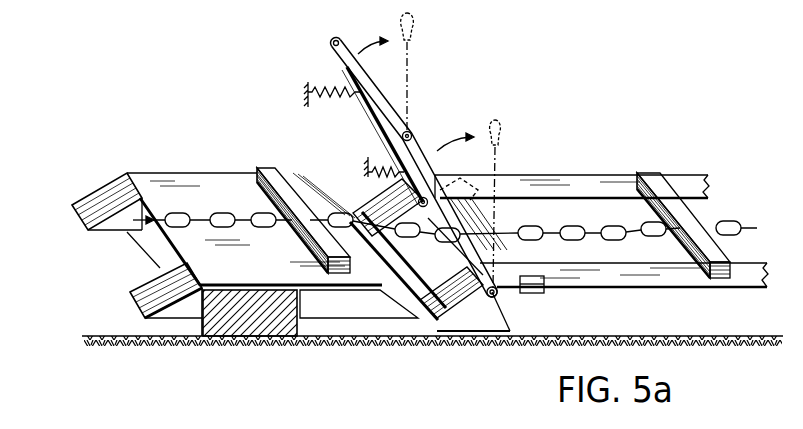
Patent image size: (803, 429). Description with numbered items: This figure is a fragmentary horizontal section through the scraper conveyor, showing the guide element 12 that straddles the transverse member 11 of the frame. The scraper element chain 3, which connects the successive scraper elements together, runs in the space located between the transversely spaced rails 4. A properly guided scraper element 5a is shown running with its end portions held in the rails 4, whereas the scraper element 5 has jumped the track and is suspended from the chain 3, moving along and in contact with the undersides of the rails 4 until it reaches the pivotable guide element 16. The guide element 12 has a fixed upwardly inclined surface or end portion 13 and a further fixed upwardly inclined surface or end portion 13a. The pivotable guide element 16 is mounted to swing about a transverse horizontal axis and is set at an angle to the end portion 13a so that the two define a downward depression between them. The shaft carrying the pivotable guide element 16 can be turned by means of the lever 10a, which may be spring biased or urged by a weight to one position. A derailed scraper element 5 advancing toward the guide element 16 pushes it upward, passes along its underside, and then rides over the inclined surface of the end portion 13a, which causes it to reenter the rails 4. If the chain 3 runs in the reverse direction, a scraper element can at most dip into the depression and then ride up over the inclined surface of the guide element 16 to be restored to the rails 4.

The scraper element chain 3 is at (648, 237).
The rails 4 is at (588, 180).
The scraper element 5 is at (536, 293).
The scraper element 5a is at (268, 175).
The lever 10a is at (331, 44).
The transverse member 11 is at (252, 315).
The guide element 12 is at (188, 182).
The end portion 13 is at (170, 307).
The end portion 13a is at (419, 320).
The pivotable guide element 16 is at (368, 205).